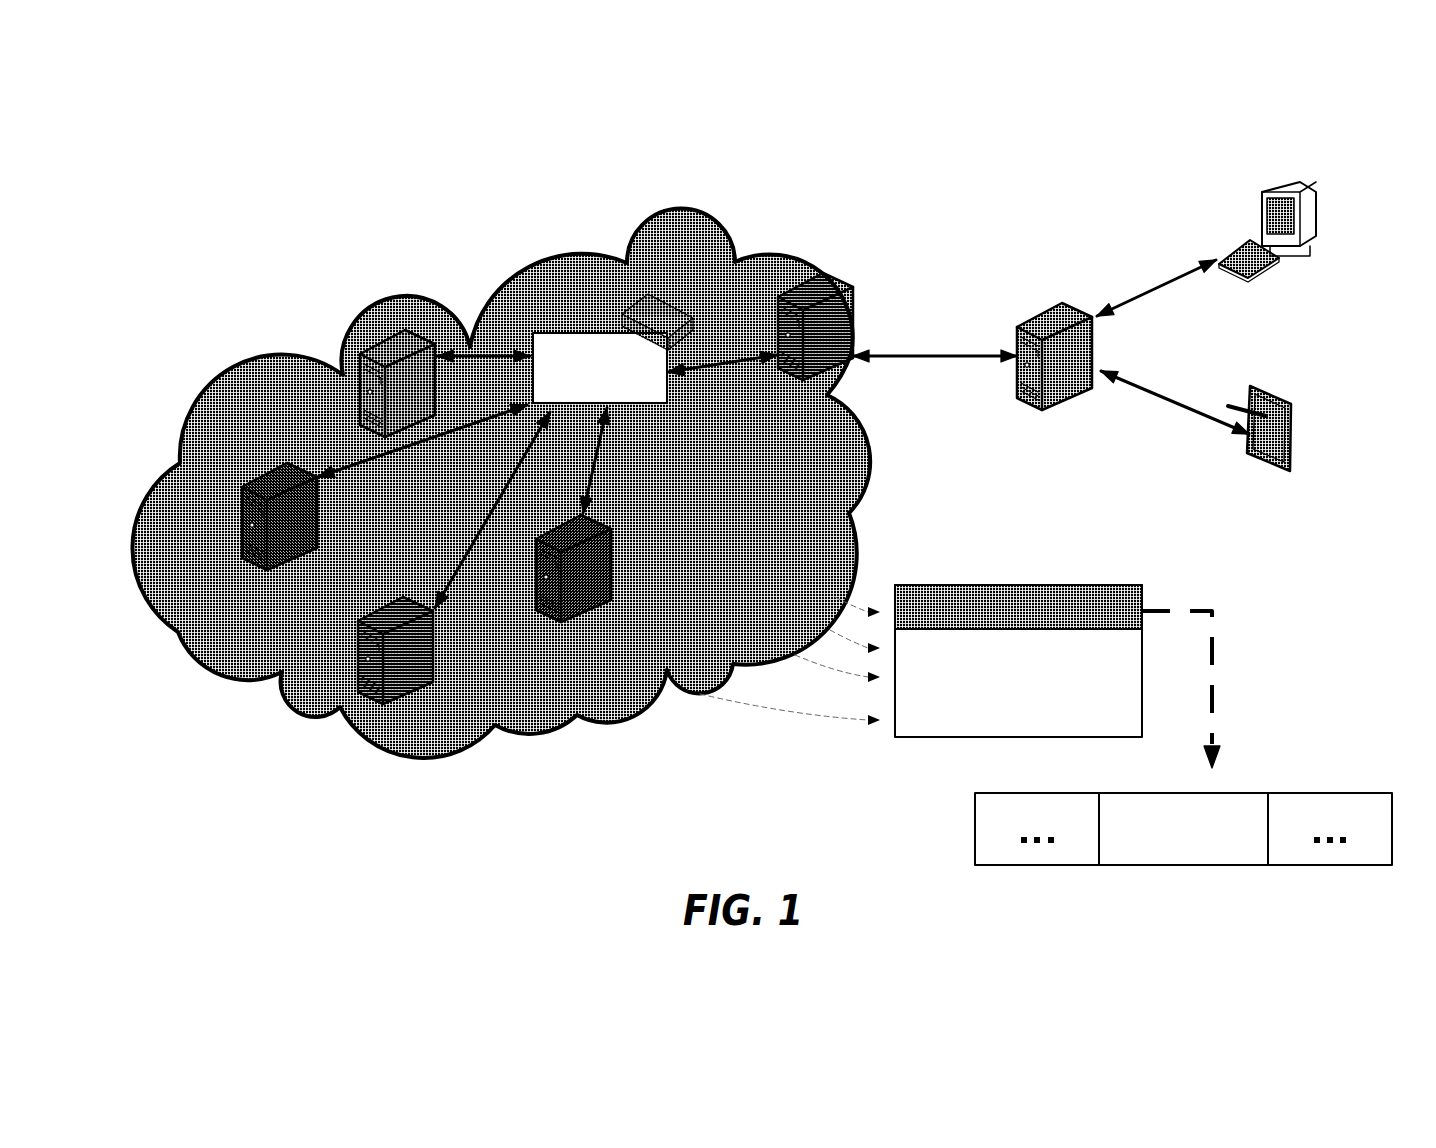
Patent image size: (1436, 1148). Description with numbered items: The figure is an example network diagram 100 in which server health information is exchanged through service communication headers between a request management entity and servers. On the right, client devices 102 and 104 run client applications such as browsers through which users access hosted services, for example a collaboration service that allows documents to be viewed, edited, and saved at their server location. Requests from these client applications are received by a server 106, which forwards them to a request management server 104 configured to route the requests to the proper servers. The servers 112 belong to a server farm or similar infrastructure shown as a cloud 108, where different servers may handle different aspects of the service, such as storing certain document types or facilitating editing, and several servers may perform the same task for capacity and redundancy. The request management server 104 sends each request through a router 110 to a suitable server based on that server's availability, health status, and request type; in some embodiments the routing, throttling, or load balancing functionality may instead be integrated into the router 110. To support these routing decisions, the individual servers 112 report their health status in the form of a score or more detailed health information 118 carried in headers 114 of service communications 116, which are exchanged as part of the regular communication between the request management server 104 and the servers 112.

The diagram 100 is at (1286, 127).
The client device 102 is at (1230, 199).
The request management server 104 is at (827, 260).
The server 106 is at (1038, 288).
The cloud 108 is at (623, 230).
The router 110 is at (602, 323).
The servers 112 is at (340, 407).
The headers 114 is at (1037, 574).
The service communications 116 is at (1005, 660).
The health information (score) 118 is at (1187, 785).